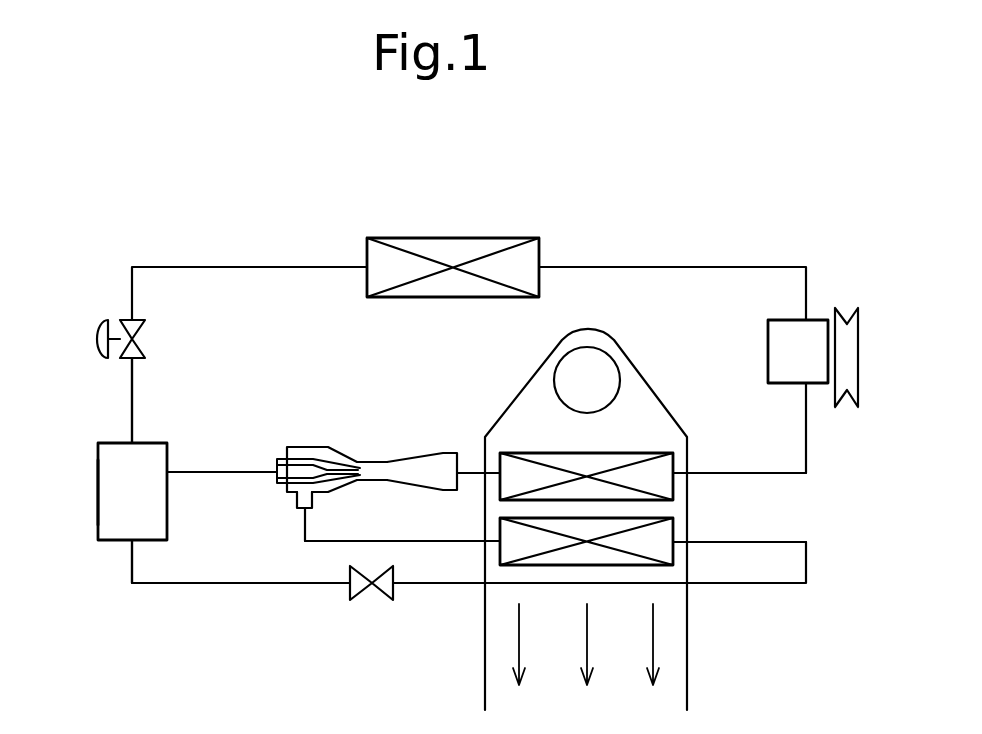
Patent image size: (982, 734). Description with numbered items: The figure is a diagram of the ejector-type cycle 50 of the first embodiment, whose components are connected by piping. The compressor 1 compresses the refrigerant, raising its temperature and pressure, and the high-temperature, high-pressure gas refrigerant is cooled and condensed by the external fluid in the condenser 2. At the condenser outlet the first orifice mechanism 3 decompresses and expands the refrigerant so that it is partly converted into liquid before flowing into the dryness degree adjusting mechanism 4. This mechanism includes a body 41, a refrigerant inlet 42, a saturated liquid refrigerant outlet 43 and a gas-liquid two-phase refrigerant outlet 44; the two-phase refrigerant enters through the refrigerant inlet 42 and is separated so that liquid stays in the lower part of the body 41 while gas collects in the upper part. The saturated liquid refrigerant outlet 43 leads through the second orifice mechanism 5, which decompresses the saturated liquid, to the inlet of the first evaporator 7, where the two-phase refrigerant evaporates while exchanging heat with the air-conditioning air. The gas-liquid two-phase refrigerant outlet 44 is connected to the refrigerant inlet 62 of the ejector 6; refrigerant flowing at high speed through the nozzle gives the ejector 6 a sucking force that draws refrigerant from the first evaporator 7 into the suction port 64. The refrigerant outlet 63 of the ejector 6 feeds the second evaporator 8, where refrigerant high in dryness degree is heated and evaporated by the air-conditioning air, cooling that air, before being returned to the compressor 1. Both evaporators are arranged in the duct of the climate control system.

The ejector-type cycle 50 is at (801, 217).
The compressor 1 is at (814, 325).
The condenser 2 is at (445, 246).
The first orifice mechanism 3 is at (142, 328).
The dryness degree adjusting mechanism 4 is at (144, 443).
The body 41 is at (98, 490).
The refrigerant inlet 42 is at (132, 442).
The saturated liquid refrigerant outlet 43 is at (130, 542).
The gas-liquid two-phase refrigerant outlet 44 is at (167, 472).
The second orifice mechanism 5 is at (350, 590).
The ejector 6 is at (341, 453).
The refrigerant inlet 62 is at (268, 465).
The refrigerant outlet 63 is at (465, 465).
The suction port 64 is at (301, 511).
The first evaporator 7 is at (665, 530).
The second evaporator 8 is at (665, 483).